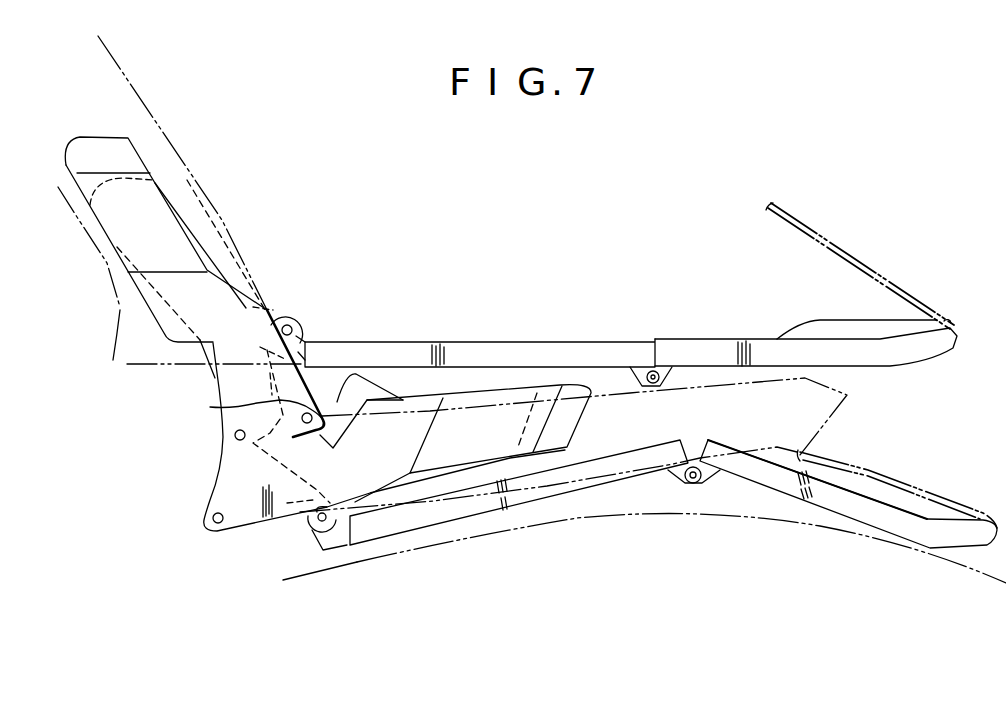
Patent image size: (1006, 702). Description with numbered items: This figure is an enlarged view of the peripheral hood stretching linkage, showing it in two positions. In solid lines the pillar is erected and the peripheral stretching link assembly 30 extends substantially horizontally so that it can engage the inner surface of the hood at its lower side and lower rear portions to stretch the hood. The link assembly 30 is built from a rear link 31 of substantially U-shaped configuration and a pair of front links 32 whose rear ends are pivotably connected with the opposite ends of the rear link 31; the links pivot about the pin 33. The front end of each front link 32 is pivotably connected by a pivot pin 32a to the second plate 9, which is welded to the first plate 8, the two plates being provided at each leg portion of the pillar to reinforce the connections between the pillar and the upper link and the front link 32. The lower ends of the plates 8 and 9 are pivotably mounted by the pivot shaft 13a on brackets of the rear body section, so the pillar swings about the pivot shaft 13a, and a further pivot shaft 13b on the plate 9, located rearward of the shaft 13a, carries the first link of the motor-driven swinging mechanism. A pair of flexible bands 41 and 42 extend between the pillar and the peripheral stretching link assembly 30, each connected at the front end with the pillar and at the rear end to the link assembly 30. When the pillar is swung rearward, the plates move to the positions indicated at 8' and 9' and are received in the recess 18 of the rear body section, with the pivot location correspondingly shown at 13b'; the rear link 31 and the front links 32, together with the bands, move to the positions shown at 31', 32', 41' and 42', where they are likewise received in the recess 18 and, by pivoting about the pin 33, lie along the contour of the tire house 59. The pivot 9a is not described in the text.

The first plate 8 is at (166, 257).
The second plate 9 is at (221, 287).
The pivot of seat cushion 9a is at (283, 308).
The pivot shaft 13a is at (236, 436).
The pivot shaft 13b is at (242, 426).
The bracket pivot hole (second position) 13b' is at (208, 547).
The peripheral stretching link assembly 30 is at (631, 319).
The rear link 31 is at (806, 321).
The front link 32 is at (480, 329).
The pivot pin 32a is at (301, 348).
The pin 33 is at (660, 385).
The flexible band 41 is at (864, 266).
The flexible band 42 is at (864, 266).
The first plate in retracted position 8' is at (455, 397).
The second plate in retracted position 9' is at (548, 512).
The rear rail section (folded position) 31' is at (848, 475).
The front rail section (folded position) 32' is at (519, 476).
The strut (folded position) 41' is at (901, 475).
The strut (folded position) 42' is at (901, 475).
The recess 18 is at (725, 488).
The tire house 59 is at (600, 520).